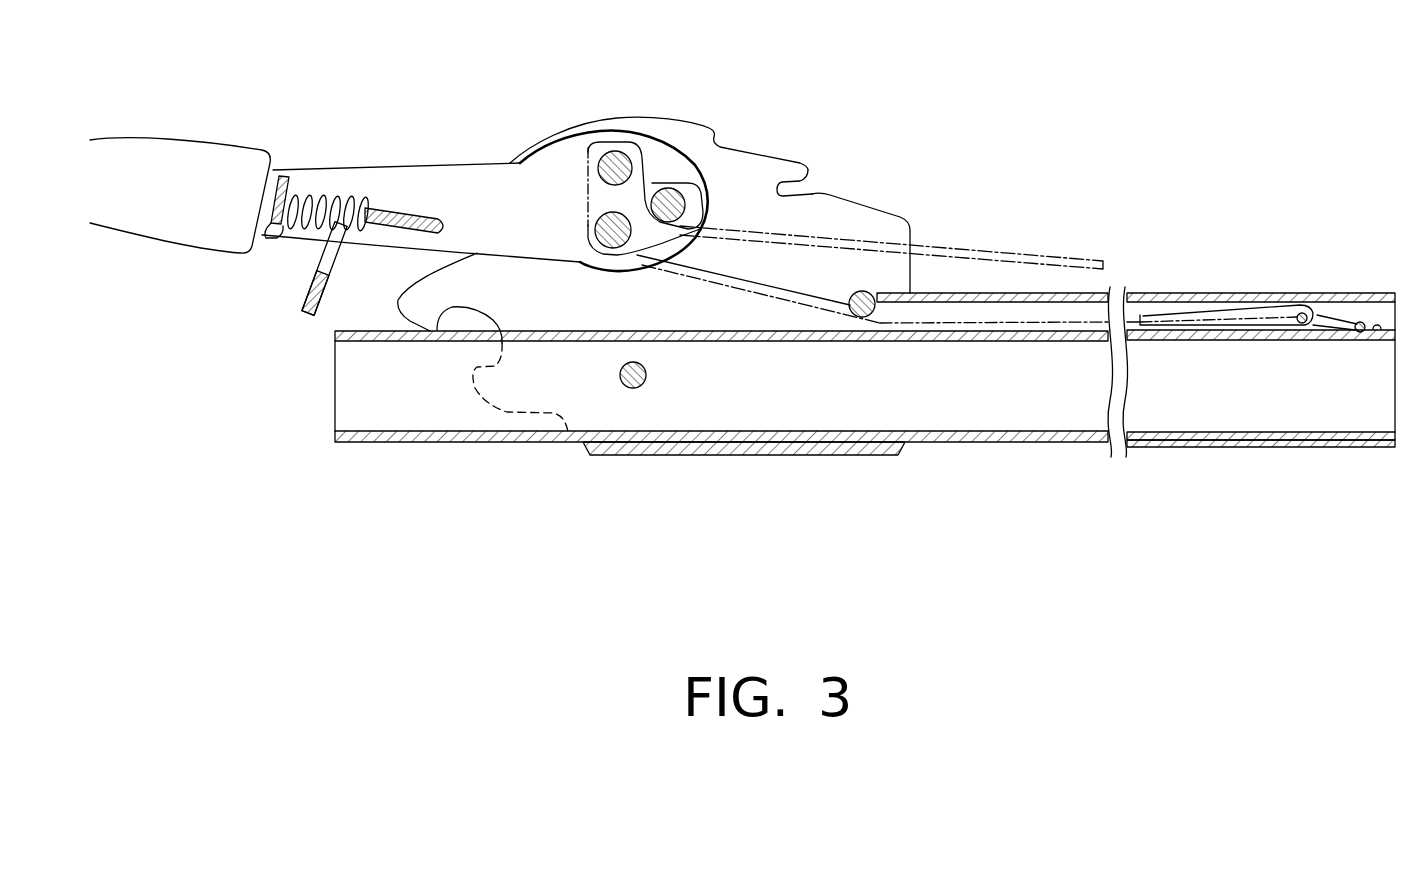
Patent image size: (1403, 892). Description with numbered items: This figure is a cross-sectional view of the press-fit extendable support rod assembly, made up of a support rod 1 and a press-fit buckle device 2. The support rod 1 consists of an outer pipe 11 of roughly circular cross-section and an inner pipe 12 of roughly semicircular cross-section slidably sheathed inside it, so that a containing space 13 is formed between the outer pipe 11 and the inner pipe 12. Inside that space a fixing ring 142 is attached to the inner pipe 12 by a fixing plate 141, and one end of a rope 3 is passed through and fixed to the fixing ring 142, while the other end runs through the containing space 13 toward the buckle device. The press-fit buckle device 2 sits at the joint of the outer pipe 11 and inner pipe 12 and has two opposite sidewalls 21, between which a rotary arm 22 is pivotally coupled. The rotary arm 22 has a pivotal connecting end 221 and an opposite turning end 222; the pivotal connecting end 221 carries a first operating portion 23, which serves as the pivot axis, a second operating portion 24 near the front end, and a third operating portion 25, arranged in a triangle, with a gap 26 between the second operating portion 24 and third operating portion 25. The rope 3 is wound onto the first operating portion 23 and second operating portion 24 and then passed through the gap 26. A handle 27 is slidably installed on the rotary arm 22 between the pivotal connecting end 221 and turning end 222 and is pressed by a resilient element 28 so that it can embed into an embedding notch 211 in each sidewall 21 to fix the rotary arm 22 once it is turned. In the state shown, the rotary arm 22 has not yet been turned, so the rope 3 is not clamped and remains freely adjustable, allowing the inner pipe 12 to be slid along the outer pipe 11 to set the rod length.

The support rod 1 is at (959, 456).
The outer pipe 11 is at (1150, 292).
The inner pipe 12 is at (392, 441).
The containing space 13 is at (973, 312).
The fixing plate 141 is at (1372, 322).
The fixing ring 142 is at (1318, 316).
The press-fit buckle device 2 is at (534, 143).
The sidewalls 21 is at (607, 119).
The embedding notch 211 is at (811, 189).
The rotary arm 22 is at (368, 163).
The pivotal connecting end 221 is at (665, 138).
The turning end 222 is at (195, 153).
The first operating portion 23 is at (600, 221).
The second operating portion 24 is at (688, 200).
The third operating portion 25 is at (628, 158).
The gap 26 is at (654, 182).
The handle 27 is at (413, 207).
The resilient element 28 is at (310, 187).
The rope 3 is at (1062, 263).